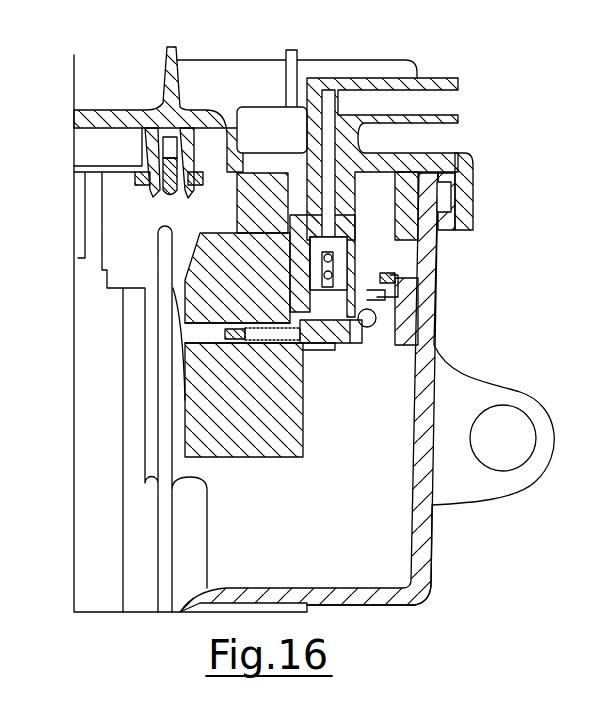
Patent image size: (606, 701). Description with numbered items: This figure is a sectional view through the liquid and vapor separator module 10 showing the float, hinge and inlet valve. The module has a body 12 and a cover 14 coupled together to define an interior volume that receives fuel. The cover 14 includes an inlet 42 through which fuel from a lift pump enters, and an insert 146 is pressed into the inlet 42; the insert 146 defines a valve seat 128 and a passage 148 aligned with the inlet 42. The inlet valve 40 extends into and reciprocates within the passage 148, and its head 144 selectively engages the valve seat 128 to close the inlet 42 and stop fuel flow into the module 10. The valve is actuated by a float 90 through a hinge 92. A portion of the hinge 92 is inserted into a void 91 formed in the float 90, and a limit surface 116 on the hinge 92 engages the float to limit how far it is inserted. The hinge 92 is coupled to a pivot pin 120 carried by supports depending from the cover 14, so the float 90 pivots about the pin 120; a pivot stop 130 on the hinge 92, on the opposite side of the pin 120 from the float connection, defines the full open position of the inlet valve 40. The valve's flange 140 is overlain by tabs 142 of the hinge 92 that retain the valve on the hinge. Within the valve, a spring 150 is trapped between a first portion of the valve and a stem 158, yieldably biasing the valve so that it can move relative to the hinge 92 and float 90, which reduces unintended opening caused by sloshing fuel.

The liquid and vapor separator module 10 is at (506, 156).
The body 12 is at (449, 561).
The cover 14 is at (450, 150).
The inlet valve 40 is at (345, 243).
The inlet 42 is at (334, 235).
The float 90 is at (275, 438).
The void 91 is at (206, 342).
The hinge 92 is at (348, 333).
The limit surface 116 is at (312, 343).
The pivot pin 120 is at (377, 319).
The valve seat 128 is at (359, 262).
The pivot stop 130 is at (375, 313).
The flange 140 is at (362, 333).
The tabs 142 is at (393, 297).
The head 144 is at (322, 250).
The insert 146 is at (312, 248).
The passage 148 is at (327, 252).
The spring 150 is at (312, 246).
The stem 158 is at (328, 311).